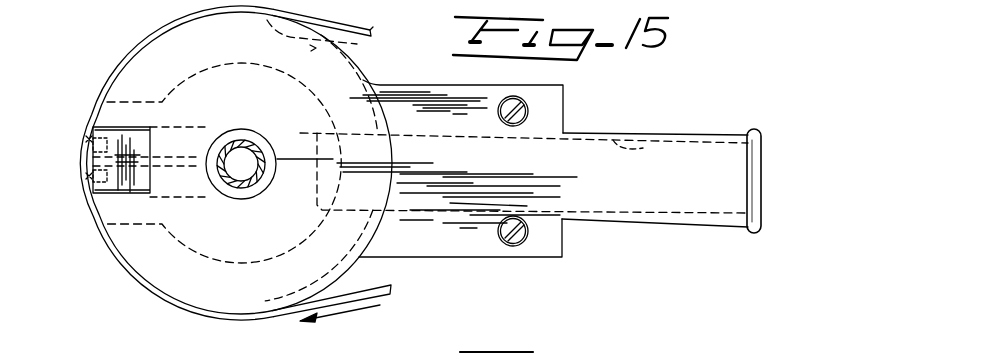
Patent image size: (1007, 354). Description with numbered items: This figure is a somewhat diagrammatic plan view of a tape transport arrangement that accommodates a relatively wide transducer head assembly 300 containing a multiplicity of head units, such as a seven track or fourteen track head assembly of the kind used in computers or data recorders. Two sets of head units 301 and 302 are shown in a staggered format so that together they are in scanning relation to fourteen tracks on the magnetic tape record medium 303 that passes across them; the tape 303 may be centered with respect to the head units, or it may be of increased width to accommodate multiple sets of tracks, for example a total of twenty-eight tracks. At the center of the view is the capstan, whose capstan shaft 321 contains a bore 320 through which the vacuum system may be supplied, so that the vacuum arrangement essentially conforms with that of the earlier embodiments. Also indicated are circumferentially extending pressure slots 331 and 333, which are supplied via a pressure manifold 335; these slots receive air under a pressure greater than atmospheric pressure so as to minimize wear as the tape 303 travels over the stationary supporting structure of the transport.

The head assembly 300 is at (115, 196).
The head units 301 is at (83, 131).
The head units 302 is at (88, 176).
The magnetic tape record medium 303 is at (125, 274).
The bore 320 is at (250, 152).
The capstan shaft 321 is at (254, 180).
The pressure slot 331 is at (417, 71).
The pressure slot 333 is at (357, 262).
The pressure manifold 335 is at (650, 137).